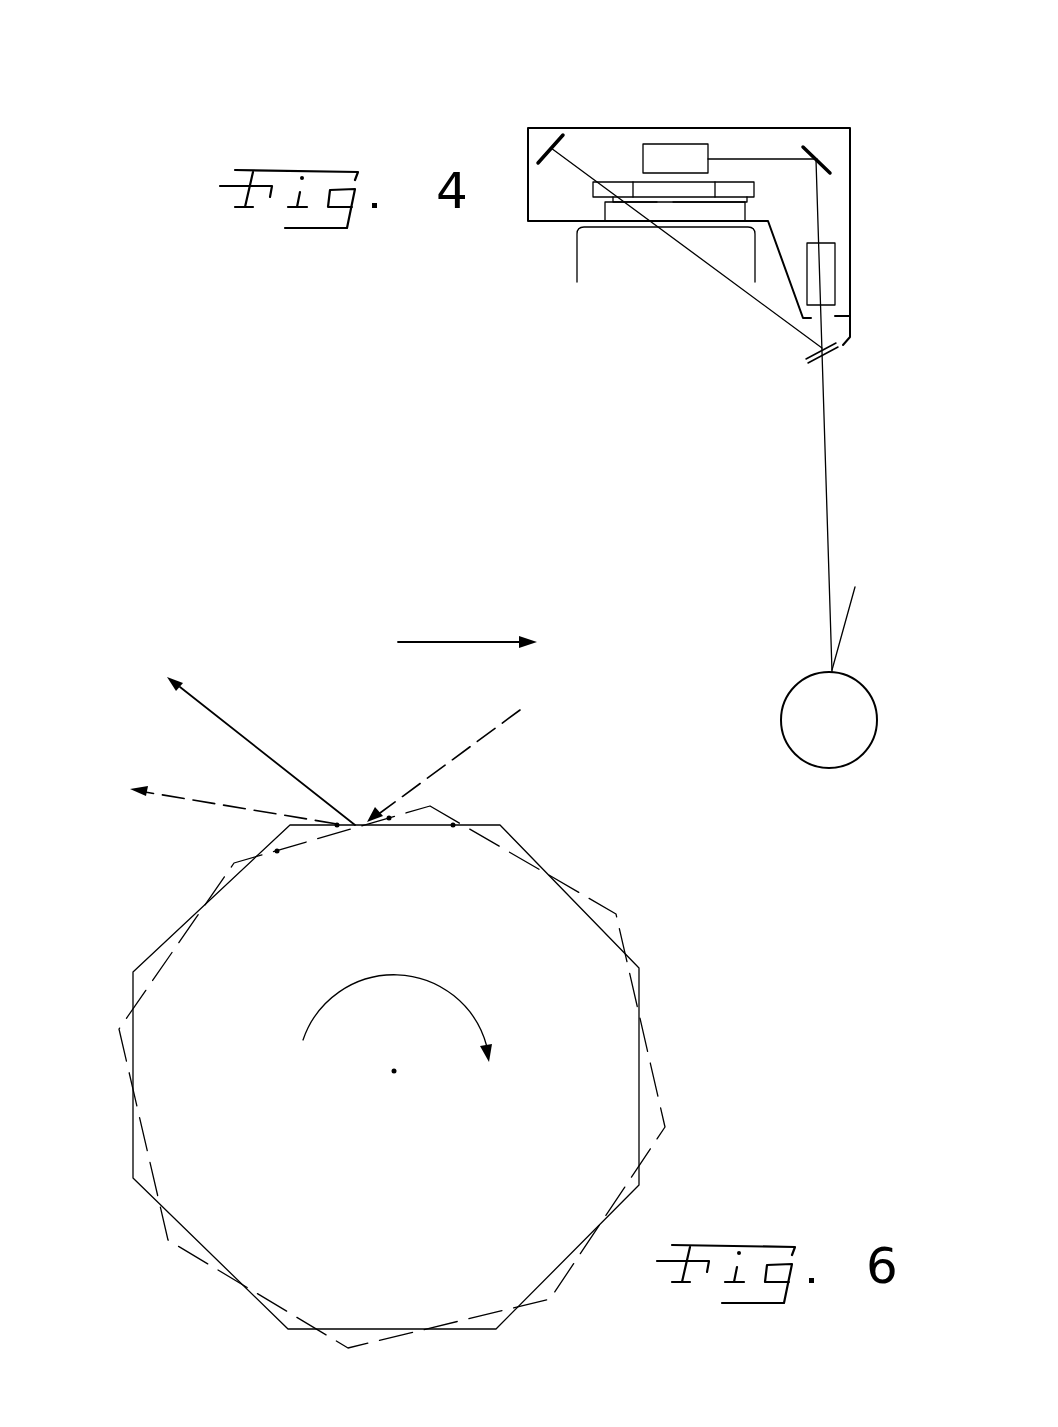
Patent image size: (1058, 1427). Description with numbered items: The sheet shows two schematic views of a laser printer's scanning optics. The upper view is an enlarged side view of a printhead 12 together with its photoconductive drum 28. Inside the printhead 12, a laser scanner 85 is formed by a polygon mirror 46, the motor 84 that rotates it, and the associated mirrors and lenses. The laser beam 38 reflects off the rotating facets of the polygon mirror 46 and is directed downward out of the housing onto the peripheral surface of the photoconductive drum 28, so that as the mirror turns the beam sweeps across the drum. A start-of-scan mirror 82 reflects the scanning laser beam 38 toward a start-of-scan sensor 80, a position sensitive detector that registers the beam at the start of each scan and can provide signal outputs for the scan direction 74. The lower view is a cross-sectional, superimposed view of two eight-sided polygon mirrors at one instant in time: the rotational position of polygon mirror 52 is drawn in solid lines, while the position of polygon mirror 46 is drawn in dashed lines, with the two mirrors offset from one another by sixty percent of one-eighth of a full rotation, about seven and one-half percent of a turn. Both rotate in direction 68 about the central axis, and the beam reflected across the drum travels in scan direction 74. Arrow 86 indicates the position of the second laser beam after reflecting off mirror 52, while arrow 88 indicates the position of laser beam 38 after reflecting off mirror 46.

In FIG. 4, the printhead 12 is at (624, 84).
In FIG. 4, the laser scanner 85 is at (845, 86).
In FIG. 4, the start-of-scan sensor 80 is at (548, 131).
In FIG. 4, the polygon mirror 46 is at (734, 187).
In FIG. 6, the polygon mirror 46 is at (551, 1296).
In FIG. 4, the motor 84 is at (623, 212).
In FIG. 4, the laser beam 38 is at (821, 205).
In FIG. 4, the start-of-scan mirror 82 is at (835, 353).
In FIG. 4, the photoconductive drum 28 is at (849, 747).
In FIG. 6, the scan direction 74 is at (488, 640).
In FIG. 6, the arrow indicating reflected laser beam position 86 is at (233, 728).
In FIG. 6, the arrow indicating reflected laser beam position 88 is at (200, 798).
In FIG. 6, the rotation direction 68 is at (424, 980).
In FIG. 6, the polygon mirror 52 is at (489, 1332).